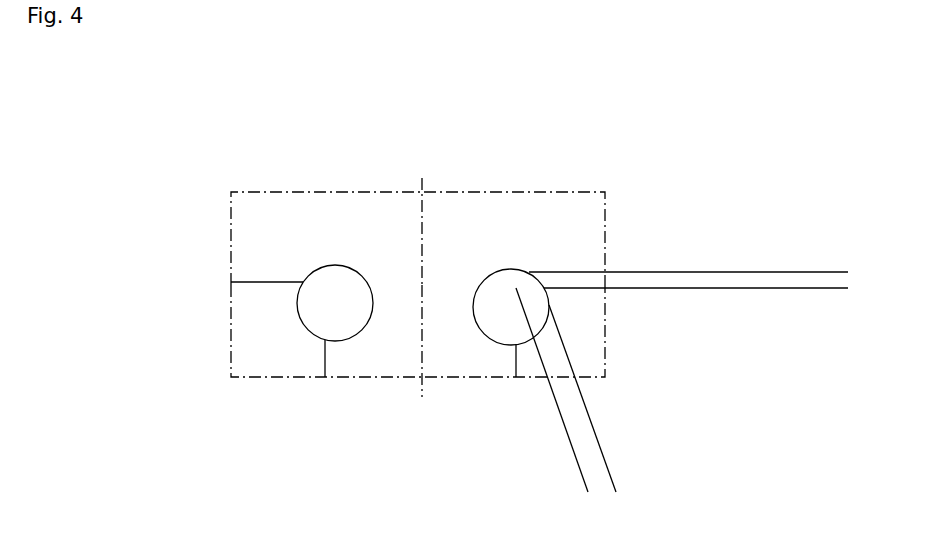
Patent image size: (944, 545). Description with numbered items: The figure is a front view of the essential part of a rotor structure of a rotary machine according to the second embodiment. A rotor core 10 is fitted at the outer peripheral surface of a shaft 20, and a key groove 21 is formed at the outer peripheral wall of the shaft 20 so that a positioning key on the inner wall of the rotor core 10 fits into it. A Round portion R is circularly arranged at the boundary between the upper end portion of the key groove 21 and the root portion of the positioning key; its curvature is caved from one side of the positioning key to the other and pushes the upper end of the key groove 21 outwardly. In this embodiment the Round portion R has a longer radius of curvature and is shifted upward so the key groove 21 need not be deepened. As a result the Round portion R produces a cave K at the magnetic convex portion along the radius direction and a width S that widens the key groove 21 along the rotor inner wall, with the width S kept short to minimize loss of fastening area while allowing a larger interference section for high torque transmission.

The rotor core 10 is at (598, 240).
The shaft 20 is at (598, 336).
The key groove 21 is at (325, 357).
The Round portion R is at (475, 278).
The cave K is at (827, 222).
The width S is at (523, 467).